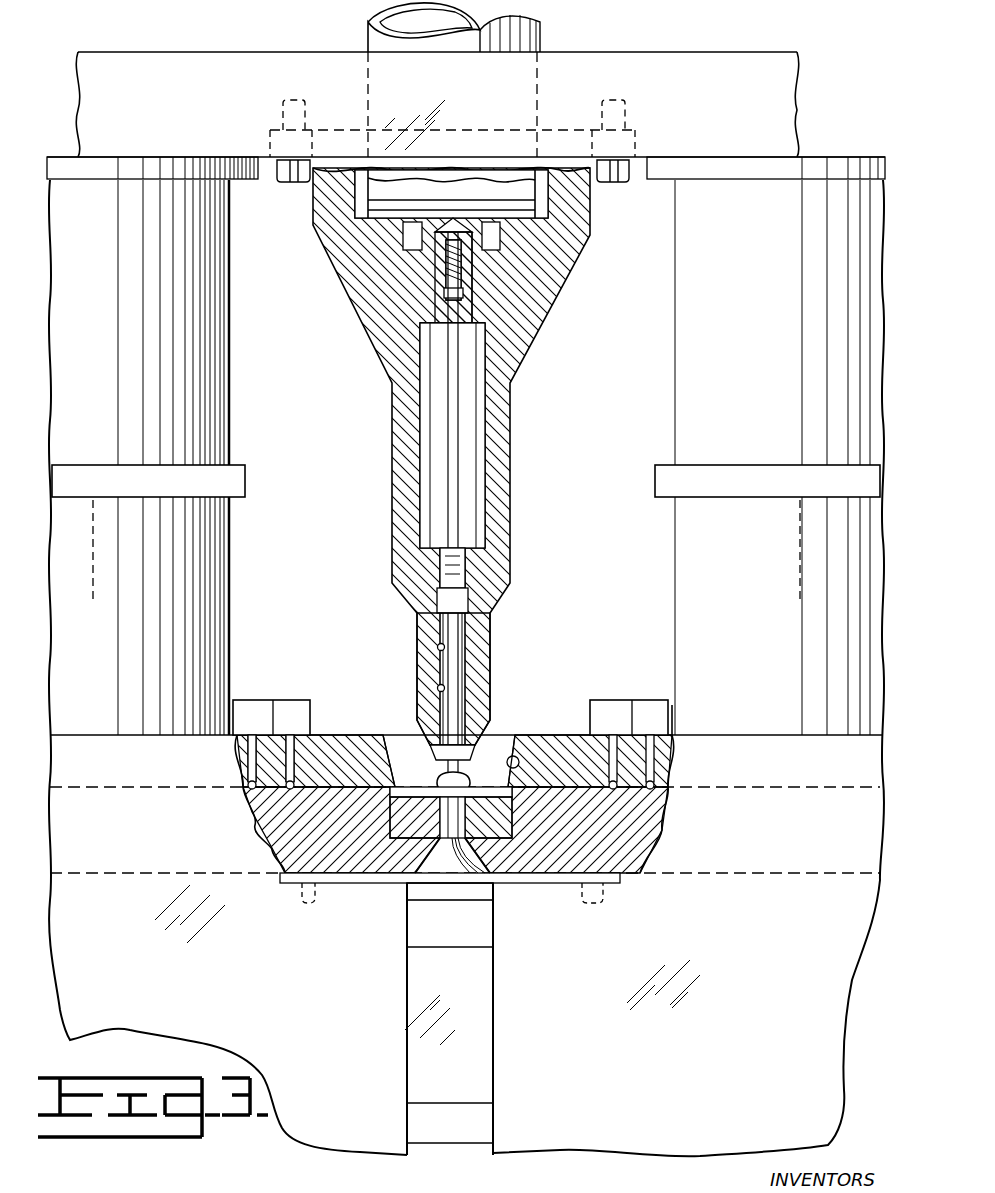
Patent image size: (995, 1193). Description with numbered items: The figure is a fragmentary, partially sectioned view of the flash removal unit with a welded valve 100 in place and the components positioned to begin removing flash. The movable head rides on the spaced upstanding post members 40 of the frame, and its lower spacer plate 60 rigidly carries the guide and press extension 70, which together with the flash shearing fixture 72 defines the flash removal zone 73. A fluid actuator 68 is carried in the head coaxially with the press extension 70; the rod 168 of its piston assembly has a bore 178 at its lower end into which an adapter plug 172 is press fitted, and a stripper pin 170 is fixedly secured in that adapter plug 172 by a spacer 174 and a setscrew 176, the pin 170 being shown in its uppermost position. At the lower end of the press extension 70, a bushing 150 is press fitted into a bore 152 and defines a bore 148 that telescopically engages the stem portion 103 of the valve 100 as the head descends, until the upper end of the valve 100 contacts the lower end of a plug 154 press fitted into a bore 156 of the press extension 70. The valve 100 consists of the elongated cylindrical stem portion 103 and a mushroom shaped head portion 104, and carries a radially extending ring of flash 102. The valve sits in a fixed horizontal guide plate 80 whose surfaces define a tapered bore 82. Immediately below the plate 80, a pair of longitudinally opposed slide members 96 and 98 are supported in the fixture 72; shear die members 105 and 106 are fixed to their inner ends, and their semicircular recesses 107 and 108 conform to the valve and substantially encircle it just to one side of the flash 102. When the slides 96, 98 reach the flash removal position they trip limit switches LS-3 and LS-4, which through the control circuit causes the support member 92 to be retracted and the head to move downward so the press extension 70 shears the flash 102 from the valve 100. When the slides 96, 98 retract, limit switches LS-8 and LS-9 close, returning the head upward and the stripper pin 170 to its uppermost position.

The spacer plate 60 is at (734, 60).
The fluid actuator 68 is at (358, 32).
The post members 40 is at (208, 270).
The guide and press extension 70 is at (502, 433).
The rod 168 is at (503, 238).
The setscrew 176 is at (440, 258).
The spacer 174 is at (442, 292).
The bore 178 is at (468, 292).
The adapter plug 172 is at (480, 320).
The pin 170 is at (442, 348).
The bushing 150 is at (470, 645).
The bore 156 is at (448, 572).
The plug 154 is at (472, 612).
The bore 148 is at (420, 655).
The stem portion 103 is at (470, 673).
The bore 152 is at (430, 698).
The valve 100 is at (470, 745).
The flash removal zone 73 is at (578, 556).
The flash shearing fixture 72 is at (582, 670).
The guide plate 80 is at (312, 782).
The tapered bore 82 is at (519, 762).
The ring of flash 102 is at (437, 765).
The shear die member 105 is at (390, 815).
The shear die member 106 is at (506, 816).
The semicircular recess 107 is at (392, 845).
The semicircular recess 108 is at (497, 850).
The slide member 96 is at (333, 872).
The slide member 98 is at (614, 872).
The head portion 104 is at (450, 900).
The support member 92 is at (480, 1015).
The limit switch LS-3 is at (278, 702).
The limit switch LS-4 is at (595, 704).
The limit switch LS-9 is at (674, 705).
The limit switch LS-8 is at (240, 745).